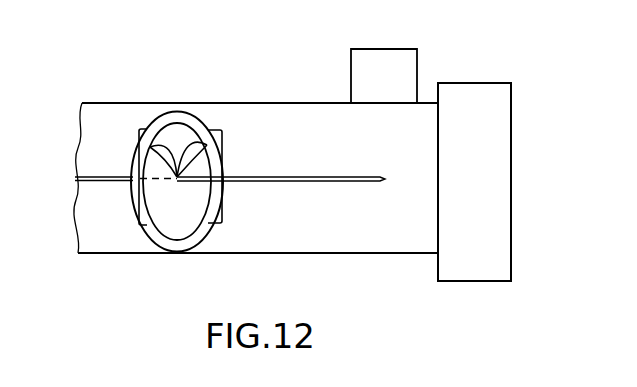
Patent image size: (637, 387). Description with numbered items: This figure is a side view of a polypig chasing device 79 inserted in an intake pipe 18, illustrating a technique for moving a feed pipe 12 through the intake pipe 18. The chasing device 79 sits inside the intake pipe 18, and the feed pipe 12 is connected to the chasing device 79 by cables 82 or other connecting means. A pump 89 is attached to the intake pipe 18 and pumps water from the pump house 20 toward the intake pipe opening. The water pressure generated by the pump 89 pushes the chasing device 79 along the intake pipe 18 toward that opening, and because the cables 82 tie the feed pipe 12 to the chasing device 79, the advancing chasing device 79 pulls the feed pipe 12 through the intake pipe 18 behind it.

The feed pipe 12 is at (327, 177).
The intake pipe 18 is at (323, 118).
The pump house 20 is at (466, 270).
The chasing device 79 is at (232, 150).
The cables 82 is at (188, 146).
The pump 89 is at (388, 58).